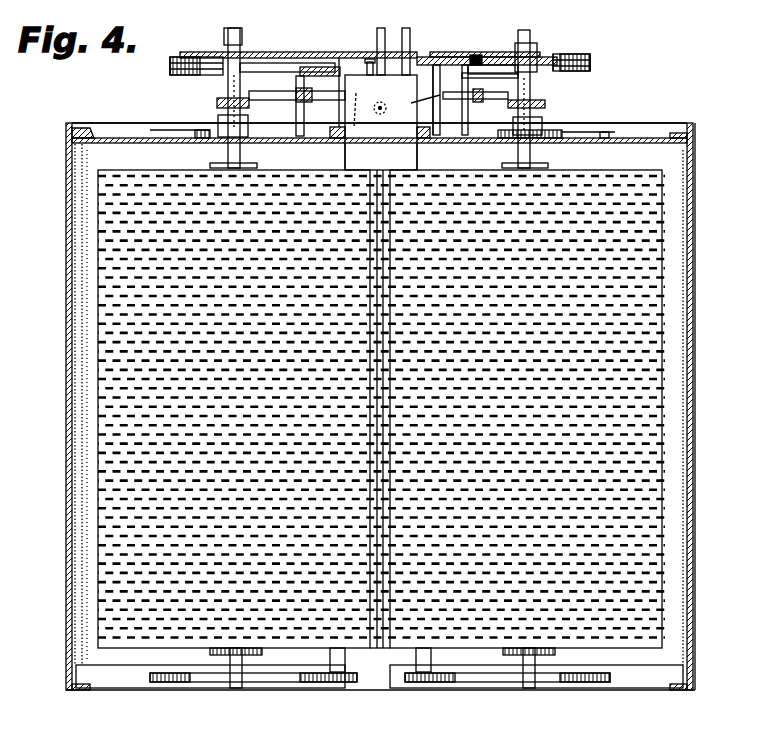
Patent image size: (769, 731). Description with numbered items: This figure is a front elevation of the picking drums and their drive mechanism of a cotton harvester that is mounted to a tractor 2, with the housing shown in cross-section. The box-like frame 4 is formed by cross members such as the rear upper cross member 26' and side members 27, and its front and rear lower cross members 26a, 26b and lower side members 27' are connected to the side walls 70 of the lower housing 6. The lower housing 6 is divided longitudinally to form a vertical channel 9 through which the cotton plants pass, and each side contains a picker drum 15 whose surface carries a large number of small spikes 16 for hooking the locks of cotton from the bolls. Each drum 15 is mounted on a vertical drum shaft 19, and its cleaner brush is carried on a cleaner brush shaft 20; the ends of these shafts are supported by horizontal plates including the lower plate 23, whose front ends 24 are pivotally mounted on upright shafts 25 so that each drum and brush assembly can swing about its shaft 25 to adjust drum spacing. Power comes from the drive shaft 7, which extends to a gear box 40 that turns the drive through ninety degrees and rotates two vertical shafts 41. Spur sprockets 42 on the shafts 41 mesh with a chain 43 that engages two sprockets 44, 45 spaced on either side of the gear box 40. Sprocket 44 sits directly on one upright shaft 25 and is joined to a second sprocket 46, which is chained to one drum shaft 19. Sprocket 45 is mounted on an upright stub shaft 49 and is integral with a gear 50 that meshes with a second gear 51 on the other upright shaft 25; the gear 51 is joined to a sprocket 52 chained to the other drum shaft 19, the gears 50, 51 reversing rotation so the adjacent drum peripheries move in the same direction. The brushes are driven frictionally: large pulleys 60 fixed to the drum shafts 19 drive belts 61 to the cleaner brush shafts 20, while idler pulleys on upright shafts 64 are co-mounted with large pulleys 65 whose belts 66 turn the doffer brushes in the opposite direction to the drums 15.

The tractor 2 is at (436, 727).
The box-like frame 4 is at (662, 137).
The lower housing 6 is at (697, 266).
The drive shaft 7 is at (385, 106).
The vertical channel 9 is at (392, 664).
The picker drum 15 is at (352, 645).
The spikes 16 is at (665, 447).
The drum shaft 19 is at (228, 152).
The cleaner brush shaft 20 is at (302, 63).
The lower horizontal plate 23 is at (292, 680).
The front ends of plates 24 is at (228, 678).
The upright shaft 25 is at (531, 37).
The rear upper cross member 26' is at (379, 112).
The front lower cross member 26a is at (622, 673).
The rear lower cross member 26b is at (142, 672).
The side member 27 is at (374, 404).
The lower side member 27' is at (696, 698).
The gear box 40 is at (384, 126).
The vertical shafts 41 is at (405, 30).
The spur sprockets 42 is at (452, 57).
The chain 43 is at (345, 53).
The sprocket 44 is at (228, 44).
The sprocket 45 is at (470, 56).
The second sprocket 46 is at (217, 103).
The upright stub shaft 49 is at (481, 56).
The gear 50 is at (470, 78).
The second gear 51 is at (562, 57).
The sprocket 52 is at (546, 104).
The pulley 60 is at (174, 71).
The belt 61 is at (174, 58).
The upright shaft 64 is at (296, 115).
The large pulley 65 is at (393, 103).
The belt 66 is at (290, 96).
The side wall 70 is at (74, 176).